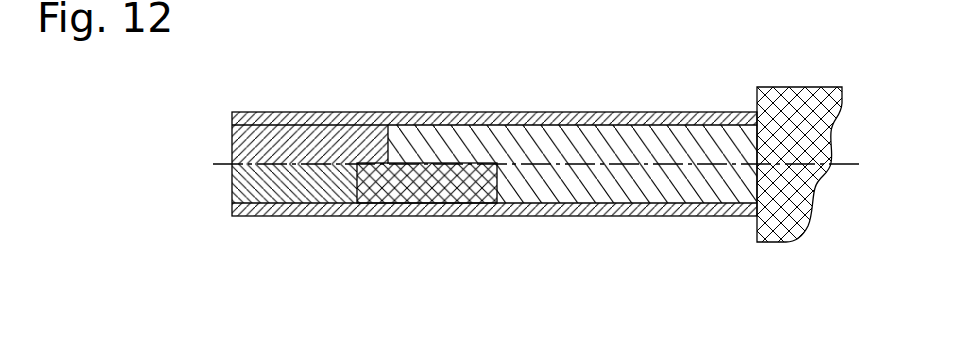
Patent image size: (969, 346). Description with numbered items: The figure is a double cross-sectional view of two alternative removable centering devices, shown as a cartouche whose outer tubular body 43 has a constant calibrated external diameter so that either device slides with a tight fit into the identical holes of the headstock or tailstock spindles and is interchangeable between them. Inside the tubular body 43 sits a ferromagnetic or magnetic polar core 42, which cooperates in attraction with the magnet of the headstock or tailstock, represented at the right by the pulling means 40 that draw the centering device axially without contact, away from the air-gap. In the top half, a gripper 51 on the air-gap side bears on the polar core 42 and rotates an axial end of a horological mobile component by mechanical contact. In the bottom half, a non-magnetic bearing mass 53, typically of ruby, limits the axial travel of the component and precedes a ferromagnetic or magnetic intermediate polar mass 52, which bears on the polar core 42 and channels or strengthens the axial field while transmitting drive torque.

The pulling means 40 is at (810, 115).
The polar core 42 is at (526, 137).
The tubular body 43 is at (640, 120).
The gripper 51 is at (331, 140).
The polar mass 52 is at (428, 193).
The bearing mass 53 is at (283, 190).